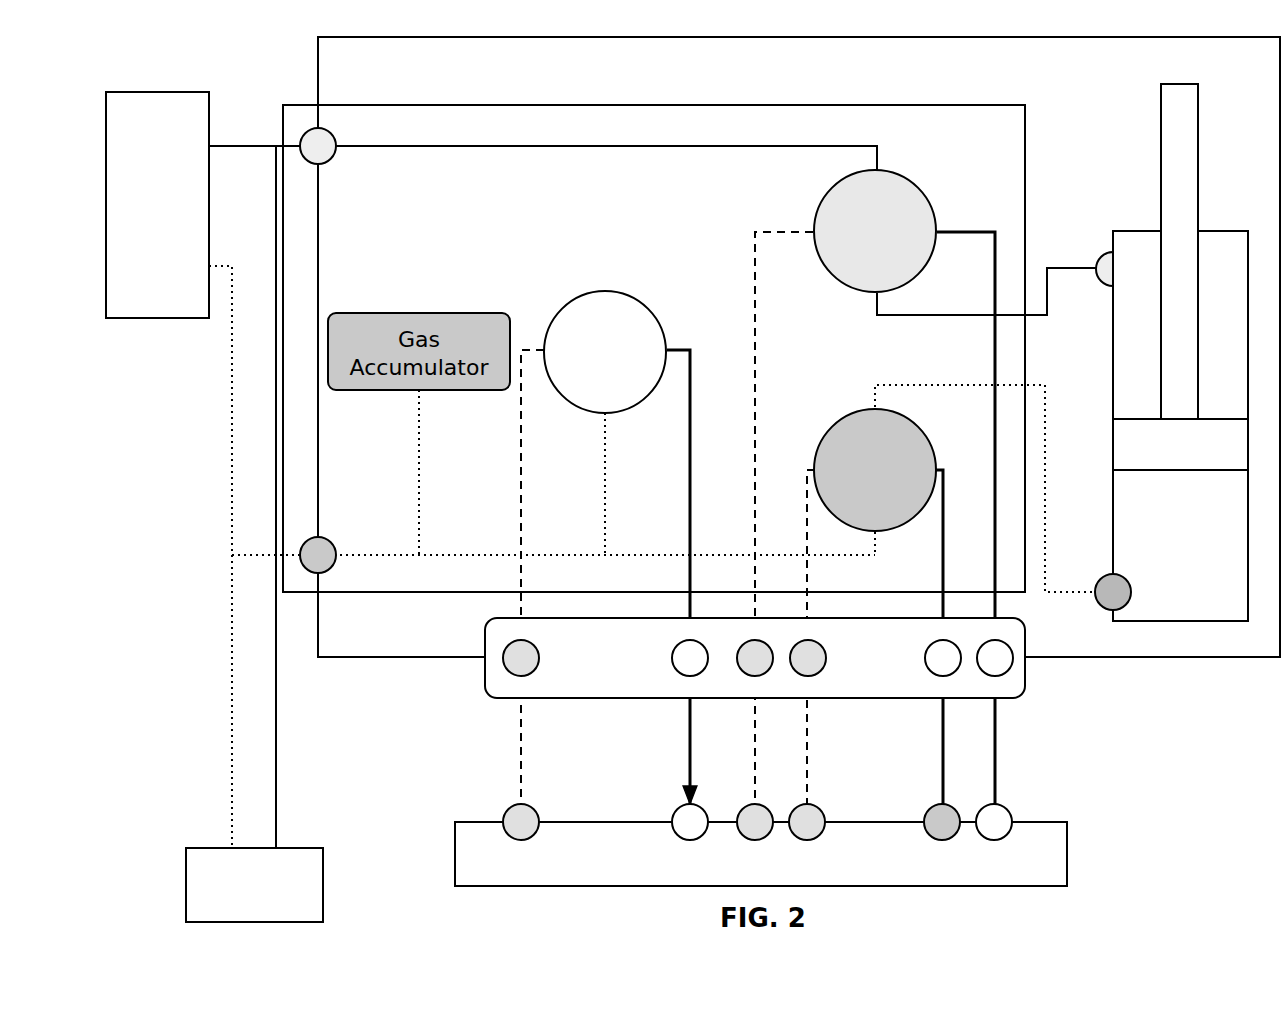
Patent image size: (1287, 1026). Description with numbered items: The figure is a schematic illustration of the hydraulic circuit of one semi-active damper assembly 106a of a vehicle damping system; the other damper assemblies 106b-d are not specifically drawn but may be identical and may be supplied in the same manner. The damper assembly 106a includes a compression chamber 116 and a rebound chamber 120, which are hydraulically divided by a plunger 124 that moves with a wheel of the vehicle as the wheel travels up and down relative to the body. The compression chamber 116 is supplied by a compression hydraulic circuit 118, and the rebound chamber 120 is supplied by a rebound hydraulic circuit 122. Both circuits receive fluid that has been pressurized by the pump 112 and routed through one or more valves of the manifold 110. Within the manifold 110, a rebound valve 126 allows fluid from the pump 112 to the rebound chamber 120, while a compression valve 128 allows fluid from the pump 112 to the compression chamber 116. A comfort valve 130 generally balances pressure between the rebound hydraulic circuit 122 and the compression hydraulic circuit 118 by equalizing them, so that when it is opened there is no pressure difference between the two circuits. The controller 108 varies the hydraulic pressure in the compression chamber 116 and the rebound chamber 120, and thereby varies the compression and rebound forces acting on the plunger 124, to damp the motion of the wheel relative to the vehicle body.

The damper assembly 106a is at (238, 50).
The other damper assemblies 106b-d is at (325, 884).
The controller 108 is at (520, 888).
The manifold 110 is at (960, 104).
The pump 112 is at (170, 91).
The compression chamber 116 is at (1164, 398).
The compression hydraulic circuit 118 is at (230, 573).
The rebound chamber 120 is at (1222, 230).
The rebound hydraulic circuit 122 is at (232, 143).
The plunger 124 is at (1112, 446).
The rebound valve 126 is at (912, 178).
The compression valve 128 is at (920, 427).
The comfort valve 130 is at (636, 296).